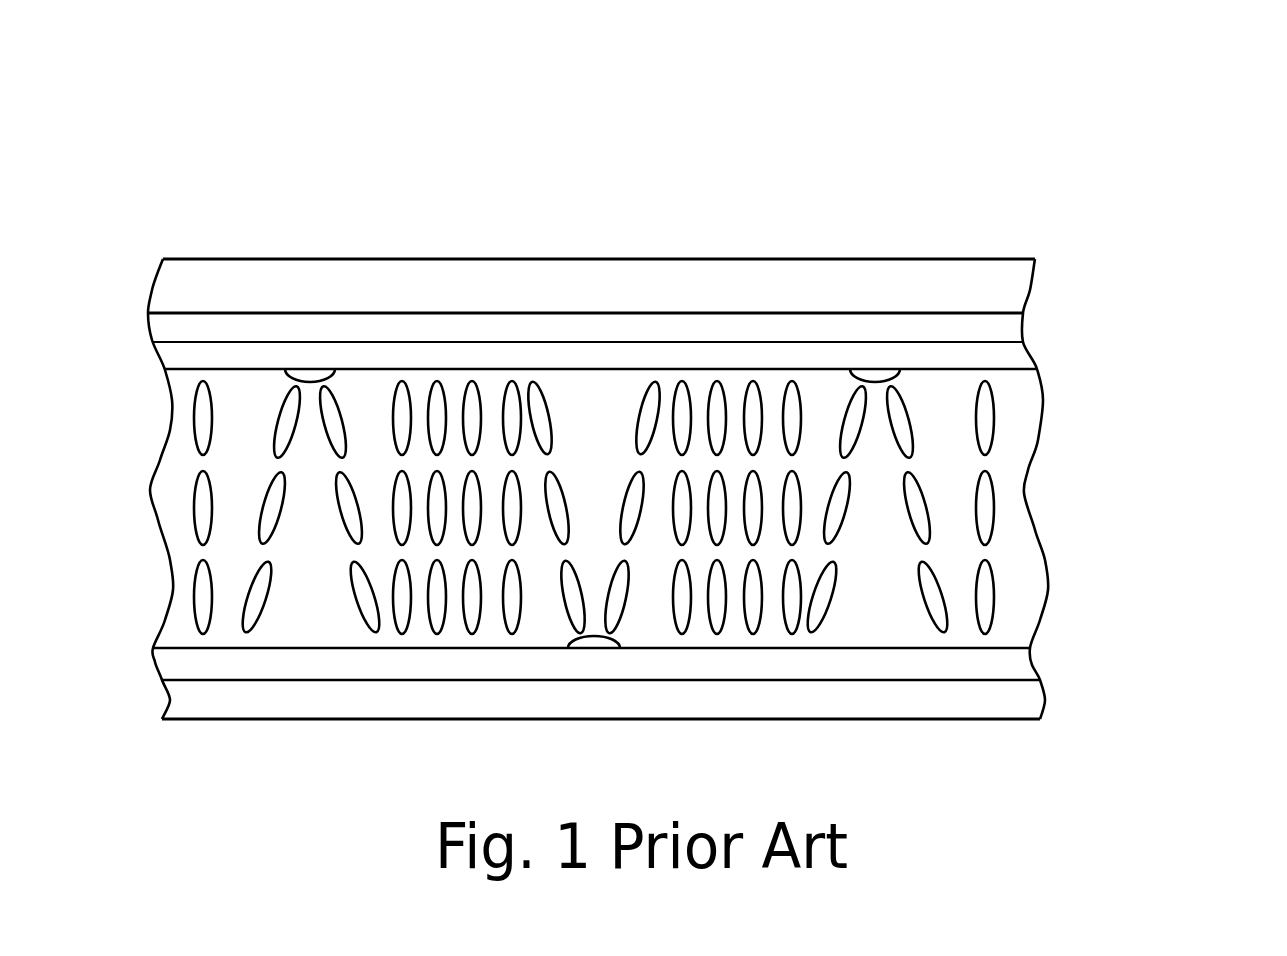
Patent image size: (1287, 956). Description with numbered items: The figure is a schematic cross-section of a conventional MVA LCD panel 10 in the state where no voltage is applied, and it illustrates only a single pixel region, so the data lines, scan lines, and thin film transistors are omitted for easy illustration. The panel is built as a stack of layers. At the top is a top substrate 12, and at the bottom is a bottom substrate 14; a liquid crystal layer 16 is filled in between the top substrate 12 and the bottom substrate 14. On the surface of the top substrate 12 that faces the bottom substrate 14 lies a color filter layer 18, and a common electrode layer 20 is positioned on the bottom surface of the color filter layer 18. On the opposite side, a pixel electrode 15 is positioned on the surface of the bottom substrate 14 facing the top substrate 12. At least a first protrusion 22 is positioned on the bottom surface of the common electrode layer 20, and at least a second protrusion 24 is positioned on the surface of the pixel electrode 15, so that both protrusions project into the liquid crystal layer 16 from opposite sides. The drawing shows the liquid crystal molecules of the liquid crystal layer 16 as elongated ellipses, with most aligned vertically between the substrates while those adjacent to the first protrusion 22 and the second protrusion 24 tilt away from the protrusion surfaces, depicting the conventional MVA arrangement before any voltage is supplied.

The MVA LCD panel 10 is at (1118, 178).
The top substrate 12 is at (978, 258).
The bottom substrate 14 is at (1025, 700).
The pixel electrode 15 is at (1023, 663).
The liquid crystal layer 16 is at (1015, 492).
The color filter layer 18 is at (1022, 327).
The common electrode layer 20 is at (1023, 362).
The first protrusion 22 is at (305, 376).
The second protrusion 24 is at (593, 642).